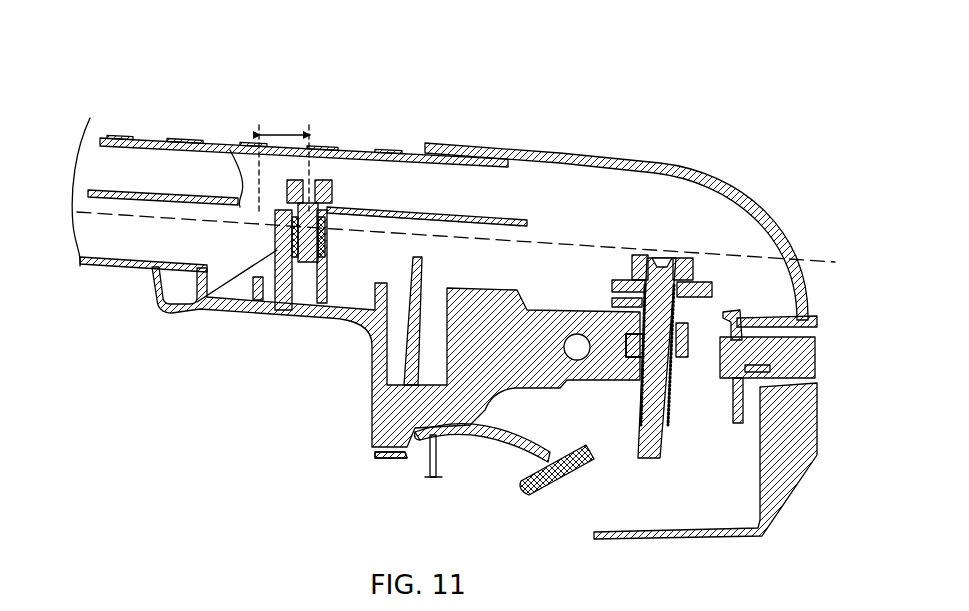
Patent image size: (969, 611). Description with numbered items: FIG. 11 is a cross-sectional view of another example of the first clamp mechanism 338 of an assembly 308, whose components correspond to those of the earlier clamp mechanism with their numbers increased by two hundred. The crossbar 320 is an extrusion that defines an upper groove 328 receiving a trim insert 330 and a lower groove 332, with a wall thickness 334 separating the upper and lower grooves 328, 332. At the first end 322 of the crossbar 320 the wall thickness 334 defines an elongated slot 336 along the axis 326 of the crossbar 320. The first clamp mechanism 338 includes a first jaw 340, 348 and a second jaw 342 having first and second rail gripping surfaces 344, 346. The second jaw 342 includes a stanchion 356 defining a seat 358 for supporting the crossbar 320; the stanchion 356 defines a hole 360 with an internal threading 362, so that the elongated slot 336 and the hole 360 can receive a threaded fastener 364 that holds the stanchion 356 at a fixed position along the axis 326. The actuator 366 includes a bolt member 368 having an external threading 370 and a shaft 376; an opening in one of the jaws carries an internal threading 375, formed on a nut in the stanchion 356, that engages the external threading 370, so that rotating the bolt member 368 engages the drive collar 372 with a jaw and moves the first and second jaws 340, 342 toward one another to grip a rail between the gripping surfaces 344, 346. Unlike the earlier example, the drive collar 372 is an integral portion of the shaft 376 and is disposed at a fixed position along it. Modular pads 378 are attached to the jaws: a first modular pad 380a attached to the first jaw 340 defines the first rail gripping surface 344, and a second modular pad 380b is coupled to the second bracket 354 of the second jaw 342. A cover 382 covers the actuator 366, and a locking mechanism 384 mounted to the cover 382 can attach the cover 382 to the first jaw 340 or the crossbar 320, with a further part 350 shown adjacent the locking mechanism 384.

The assembly 308 is at (90, 60).
The trim insert 330 is at (165, 139).
The elongated slot 336 is at (229, 165).
The threaded fastener 364 is at (328, 183).
The upper groove 328 is at (463, 205).
The first end 322 is at (463, 205).
The wall thickness 334 is at (530, 222).
The lower groove 332 is at (378, 222).
The axis 326 is at (818, 258).
The crossbar 320 is at (113, 266).
The seat 358 is at (362, 343).
The hole 360 is at (362, 357).
The internal threading 362 is at (370, 428).
The second jaw 342 is at (362, 343).
The stanchion 356 is at (362, 343).
The first clamp mechanism 338 is at (330, 446).
The modular pads 378 is at (363, 487).
The second modular pad 380b is at (378, 460).
The first modular pad 380a is at (527, 497).
The first rail gripping surface 344 is at (553, 453).
The second rail gripping surface 346 is at (448, 442).
The second bracket 354 is at (557, 496).
The external threading 370 is at (694, 370).
The shaft 376 is at (662, 410).
The actuator 366 is at (660, 240).
The bolt member 368 is at (643, 254).
The first jaw 340 is at (575, 289).
The tab flange 348 is at (610, 300).
The drive collar 372 is at (707, 281).
The internal threading 375 is at (636, 384).
The hook 350 is at (728, 313).
The locking mechanism 384 is at (817, 352).
The cover 382 is at (807, 480).